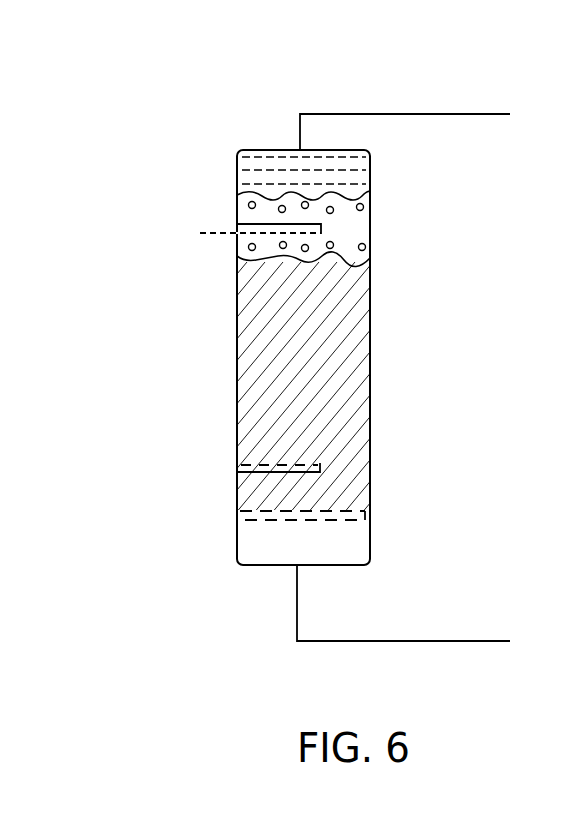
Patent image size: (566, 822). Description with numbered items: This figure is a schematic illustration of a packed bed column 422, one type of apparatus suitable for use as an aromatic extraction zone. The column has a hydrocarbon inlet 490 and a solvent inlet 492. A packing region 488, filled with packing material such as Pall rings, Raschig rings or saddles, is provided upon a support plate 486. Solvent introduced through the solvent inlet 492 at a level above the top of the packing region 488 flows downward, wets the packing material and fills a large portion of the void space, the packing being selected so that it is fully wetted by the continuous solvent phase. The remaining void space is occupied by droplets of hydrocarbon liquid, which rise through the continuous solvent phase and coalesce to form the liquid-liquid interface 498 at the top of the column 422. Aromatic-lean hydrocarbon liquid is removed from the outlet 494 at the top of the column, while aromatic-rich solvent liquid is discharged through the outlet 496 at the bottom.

The packed bed column 422 is at (168, 76).
The support plate 486 is at (365, 514).
The packing region 488 is at (350, 363).
The hydrocarbon inlet 490 is at (237, 472).
The solvent inlet 492 is at (237, 224).
The outlet 494 is at (405, 117).
The outlet 496 is at (403, 603).
The liquid-liquid interface 498 is at (345, 255).